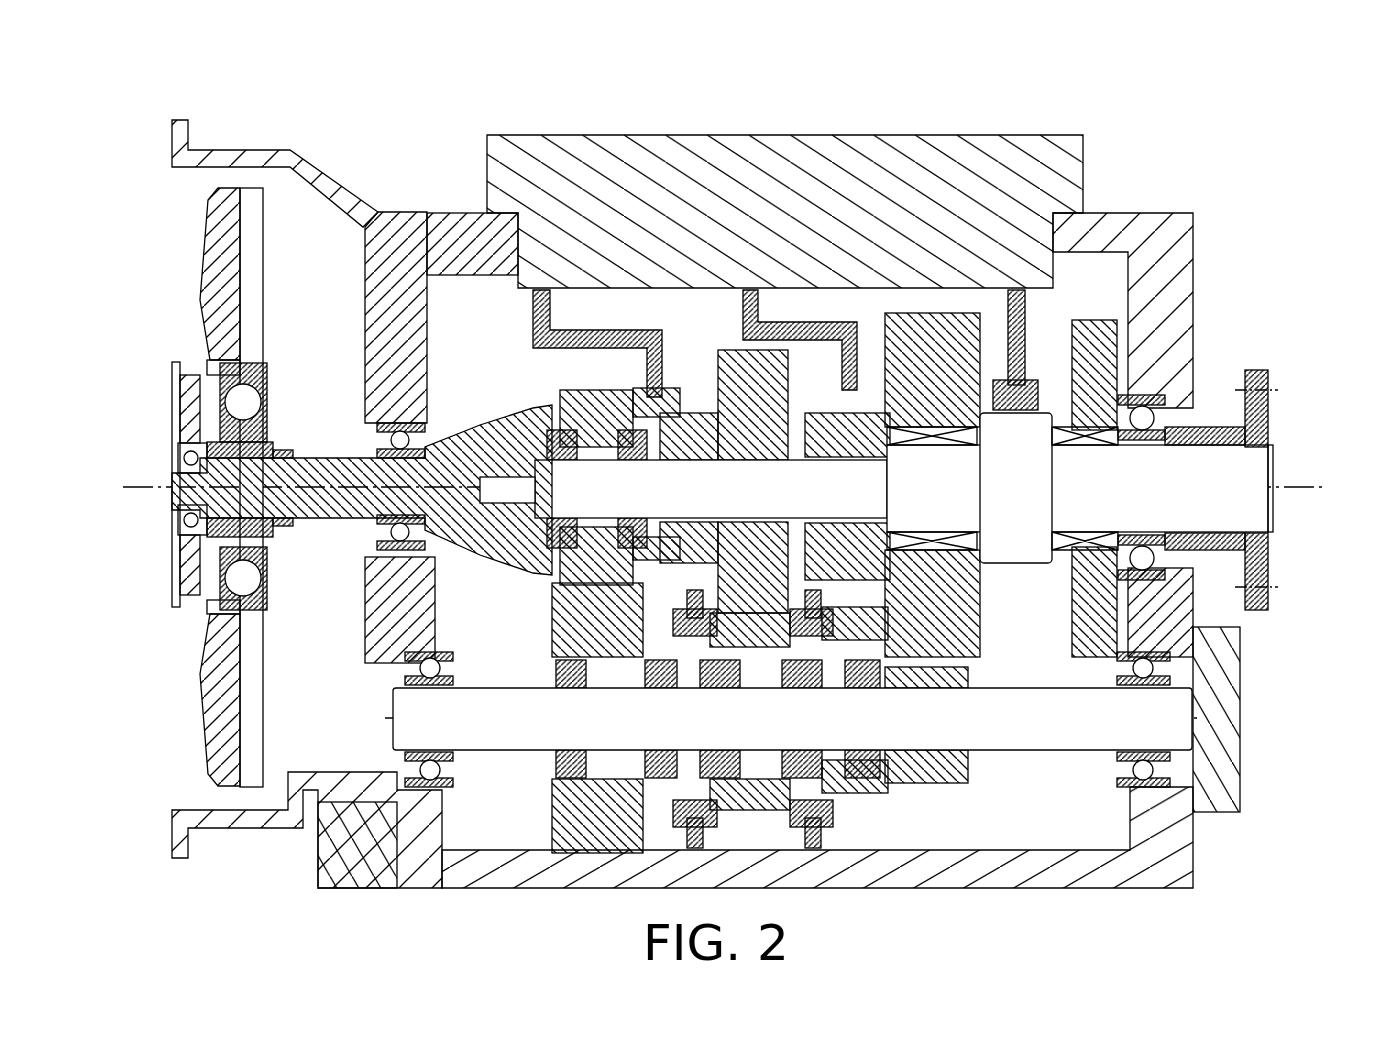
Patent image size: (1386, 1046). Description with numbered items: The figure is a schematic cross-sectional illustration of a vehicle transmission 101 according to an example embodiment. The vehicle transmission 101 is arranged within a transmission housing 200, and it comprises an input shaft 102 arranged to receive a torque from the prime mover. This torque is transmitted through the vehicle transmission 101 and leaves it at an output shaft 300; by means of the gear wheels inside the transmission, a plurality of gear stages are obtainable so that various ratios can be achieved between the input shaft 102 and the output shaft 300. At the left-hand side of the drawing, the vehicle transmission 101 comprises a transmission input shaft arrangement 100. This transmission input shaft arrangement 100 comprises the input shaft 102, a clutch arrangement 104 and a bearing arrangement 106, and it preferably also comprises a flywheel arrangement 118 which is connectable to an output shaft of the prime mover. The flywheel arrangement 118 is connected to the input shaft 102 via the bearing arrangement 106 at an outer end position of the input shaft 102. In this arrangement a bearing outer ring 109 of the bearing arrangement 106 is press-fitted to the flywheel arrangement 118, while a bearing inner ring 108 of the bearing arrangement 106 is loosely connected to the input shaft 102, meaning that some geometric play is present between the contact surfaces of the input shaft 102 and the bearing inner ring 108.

The transmission input shaft arrangement 100 is at (302, 487).
The vehicle transmission 101 is at (213, 112).
The input shaft 102 is at (203, 498).
The clutch arrangement 104 is at (217, 410).
The bearing arrangement 106 is at (168, 440).
The bearing inner ring 108 is at (177, 510).
The bearing outer ring 109 is at (177, 447).
The flywheel arrangement 118 is at (193, 328).
The transmission housing 200 is at (1047, 112).
The output shaft 300 is at (1260, 422).